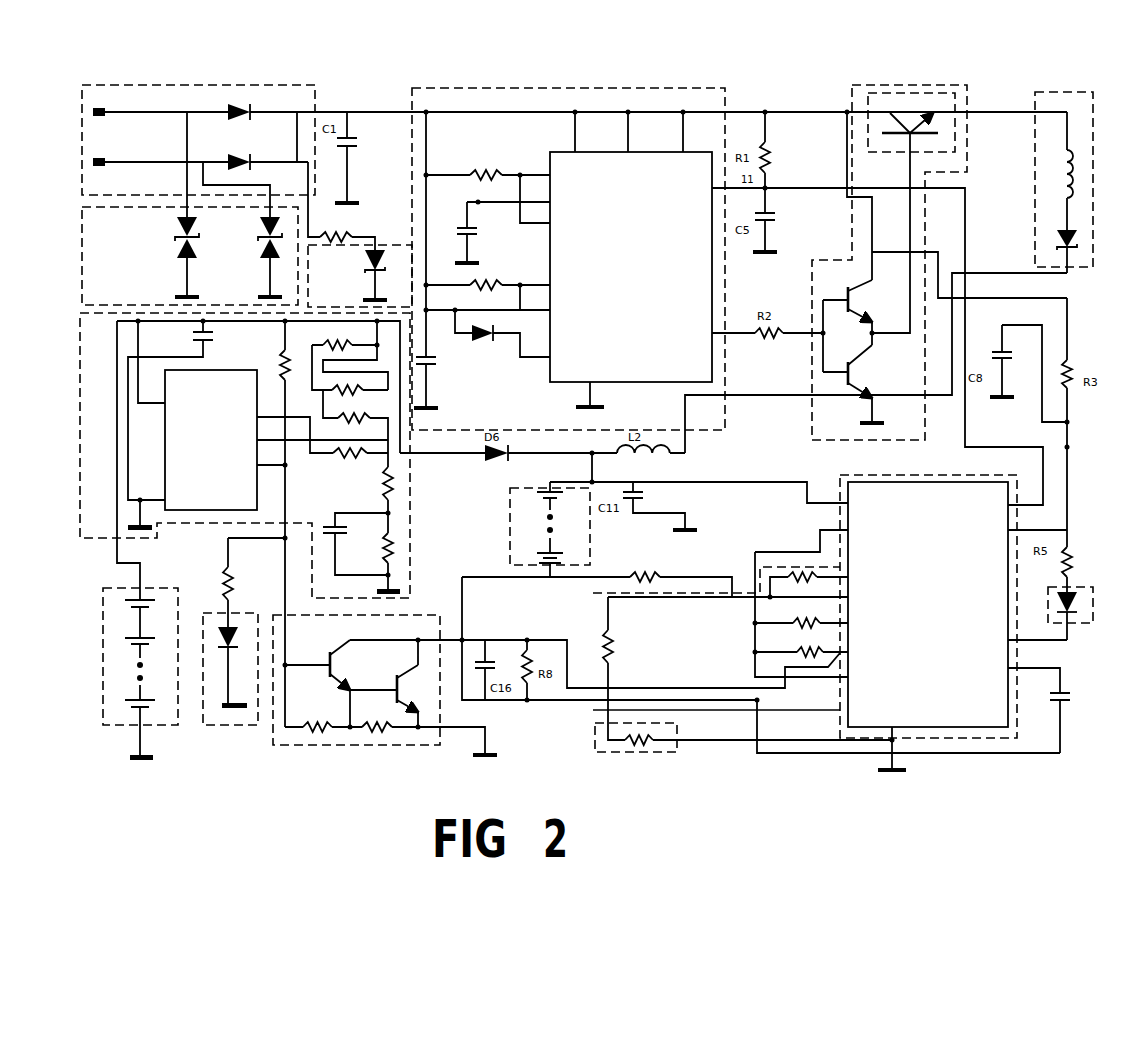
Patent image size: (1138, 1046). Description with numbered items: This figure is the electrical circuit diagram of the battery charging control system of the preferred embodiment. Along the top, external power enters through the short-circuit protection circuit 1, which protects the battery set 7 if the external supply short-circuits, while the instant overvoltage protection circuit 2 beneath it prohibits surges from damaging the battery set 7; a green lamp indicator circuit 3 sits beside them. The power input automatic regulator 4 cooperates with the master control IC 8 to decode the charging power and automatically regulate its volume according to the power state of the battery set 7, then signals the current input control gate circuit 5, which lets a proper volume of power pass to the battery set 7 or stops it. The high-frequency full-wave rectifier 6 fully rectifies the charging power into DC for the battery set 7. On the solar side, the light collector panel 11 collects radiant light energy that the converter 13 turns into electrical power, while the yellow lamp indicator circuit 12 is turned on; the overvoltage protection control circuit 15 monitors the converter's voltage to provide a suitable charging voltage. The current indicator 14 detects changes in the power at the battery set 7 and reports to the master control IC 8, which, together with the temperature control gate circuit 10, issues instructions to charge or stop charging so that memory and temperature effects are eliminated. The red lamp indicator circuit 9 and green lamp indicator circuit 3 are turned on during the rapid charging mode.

The short-circuit protection circuit 1 is at (190, 83).
The instant overvoltage protection circuit 2 is at (80, 275).
The green lamp indicator circuit 3 is at (390, 243).
The power input automatic regulator 4 is at (572, 87).
The current input control gate circuit 5 is at (888, 85).
The high-frequency full-wave rectifier 6 is at (1063, 90).
The battery set 7 is at (508, 528).
The master control IC 8 is at (912, 755).
The red lamp indicator circuit 9 is at (1097, 597).
The temperature control gate circuit 10 is at (728, 712).
The light collector panel 11 is at (105, 677).
The yellow lamp indicator circuit 12 is at (228, 727).
The converter 13 is at (78, 430).
The current indicator 14 is at (635, 753).
The overvoltage protection control circuit 15 is at (365, 748).